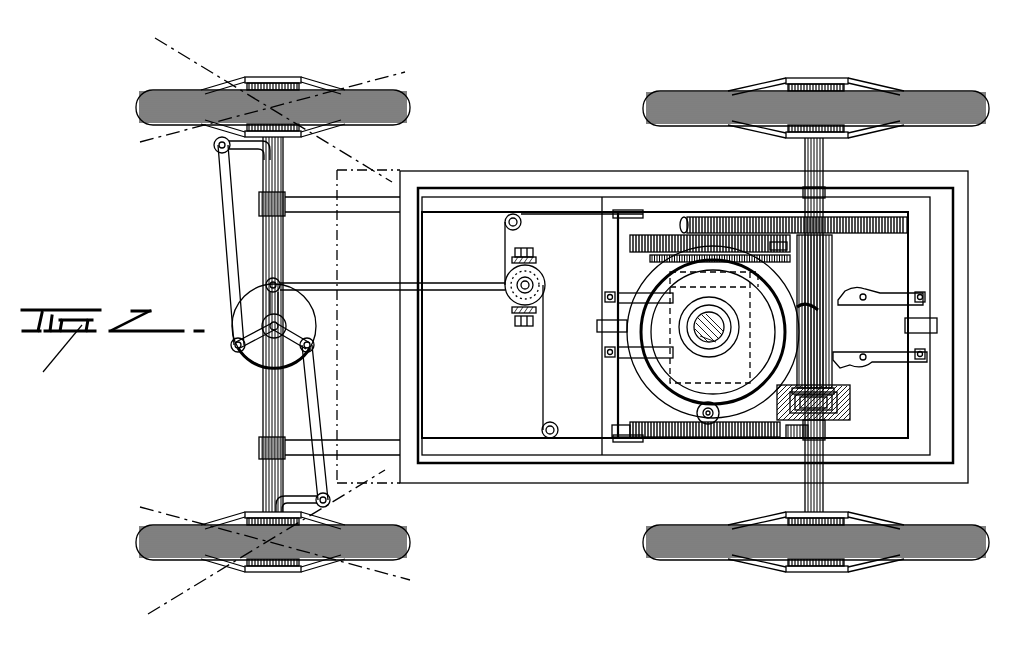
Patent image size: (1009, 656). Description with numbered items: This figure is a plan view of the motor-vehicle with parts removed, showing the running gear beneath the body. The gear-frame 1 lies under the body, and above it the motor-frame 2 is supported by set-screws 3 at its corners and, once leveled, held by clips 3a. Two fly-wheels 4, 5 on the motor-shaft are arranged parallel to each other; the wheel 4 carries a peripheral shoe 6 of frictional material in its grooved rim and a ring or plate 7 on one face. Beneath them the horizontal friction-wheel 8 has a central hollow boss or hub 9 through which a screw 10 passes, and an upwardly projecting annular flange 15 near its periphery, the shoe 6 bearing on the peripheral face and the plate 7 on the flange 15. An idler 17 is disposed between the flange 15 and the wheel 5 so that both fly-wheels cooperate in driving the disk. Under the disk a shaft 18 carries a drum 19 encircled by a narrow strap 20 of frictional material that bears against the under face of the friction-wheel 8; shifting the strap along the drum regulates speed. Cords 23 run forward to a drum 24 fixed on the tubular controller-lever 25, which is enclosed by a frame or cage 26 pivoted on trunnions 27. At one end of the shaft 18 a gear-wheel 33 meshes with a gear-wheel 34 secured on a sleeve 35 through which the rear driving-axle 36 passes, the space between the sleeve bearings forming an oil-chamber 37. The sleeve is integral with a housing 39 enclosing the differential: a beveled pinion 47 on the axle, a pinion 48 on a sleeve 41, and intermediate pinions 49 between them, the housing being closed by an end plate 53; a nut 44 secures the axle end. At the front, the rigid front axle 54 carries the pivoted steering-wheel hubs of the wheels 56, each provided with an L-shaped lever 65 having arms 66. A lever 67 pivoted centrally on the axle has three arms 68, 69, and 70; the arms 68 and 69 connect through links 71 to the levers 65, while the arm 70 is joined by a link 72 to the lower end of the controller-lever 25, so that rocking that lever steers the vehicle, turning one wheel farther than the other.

The gear-frame 1 is at (623, 448).
The motor-frame 2 is at (620, 358).
The set-screws 3 is at (604, 297).
The clips 3a is at (597, 327).
The wheel 4 is at (630, 244).
The wheel 5 is at (680, 406).
The peripheral shoe 6 is at (778, 252).
The ring or plate 7 is at (651, 259).
The friction-wheel 8 is at (652, 382).
The hollow boss or hub 9 is at (727, 344).
The screw 10 is at (722, 316).
The annular flange 15 is at (707, 372).
The idler 17 is at (720, 413).
The shaft 18 is at (787, 193).
The drum 19 is at (740, 320).
The strap 20 is at (714, 327).
The cords or straps 23 is at (587, 217).
The drum 24 is at (546, 284).
The tubular lever 25 is at (506, 276).
The frame or cage 26 is at (512, 311).
The trunnions 27 is at (526, 250).
The gear-wheel 33 is at (787, 225).
The gear-wheel 34 is at (876, 245).
The sleeve 35 is at (879, 280).
The rear driving-axle 36 is at (826, 158).
The oil-chamber 37 is at (829, 311).
The housing 39 is at (850, 391).
The sleeve 41 is at (820, 432).
The nut 44 is at (766, 406).
The beveled pinion 47 is at (832, 388).
The pinion 48 is at (837, 420).
The pinions 49 is at (850, 405).
The end plate 53 is at (797, 432).
The front axle 54 is at (285, 248).
The wheel 56 is at (284, 328).
The L-shaped levers 65 is at (278, 144).
The arms 66 is at (258, 150).
The lever 67 is at (270, 338).
The arm 68 is at (231, 345).
The arm 69 is at (310, 325).
The arm 70 is at (277, 291).
The links 71 is at (232, 247).
The link 72 is at (372, 278).